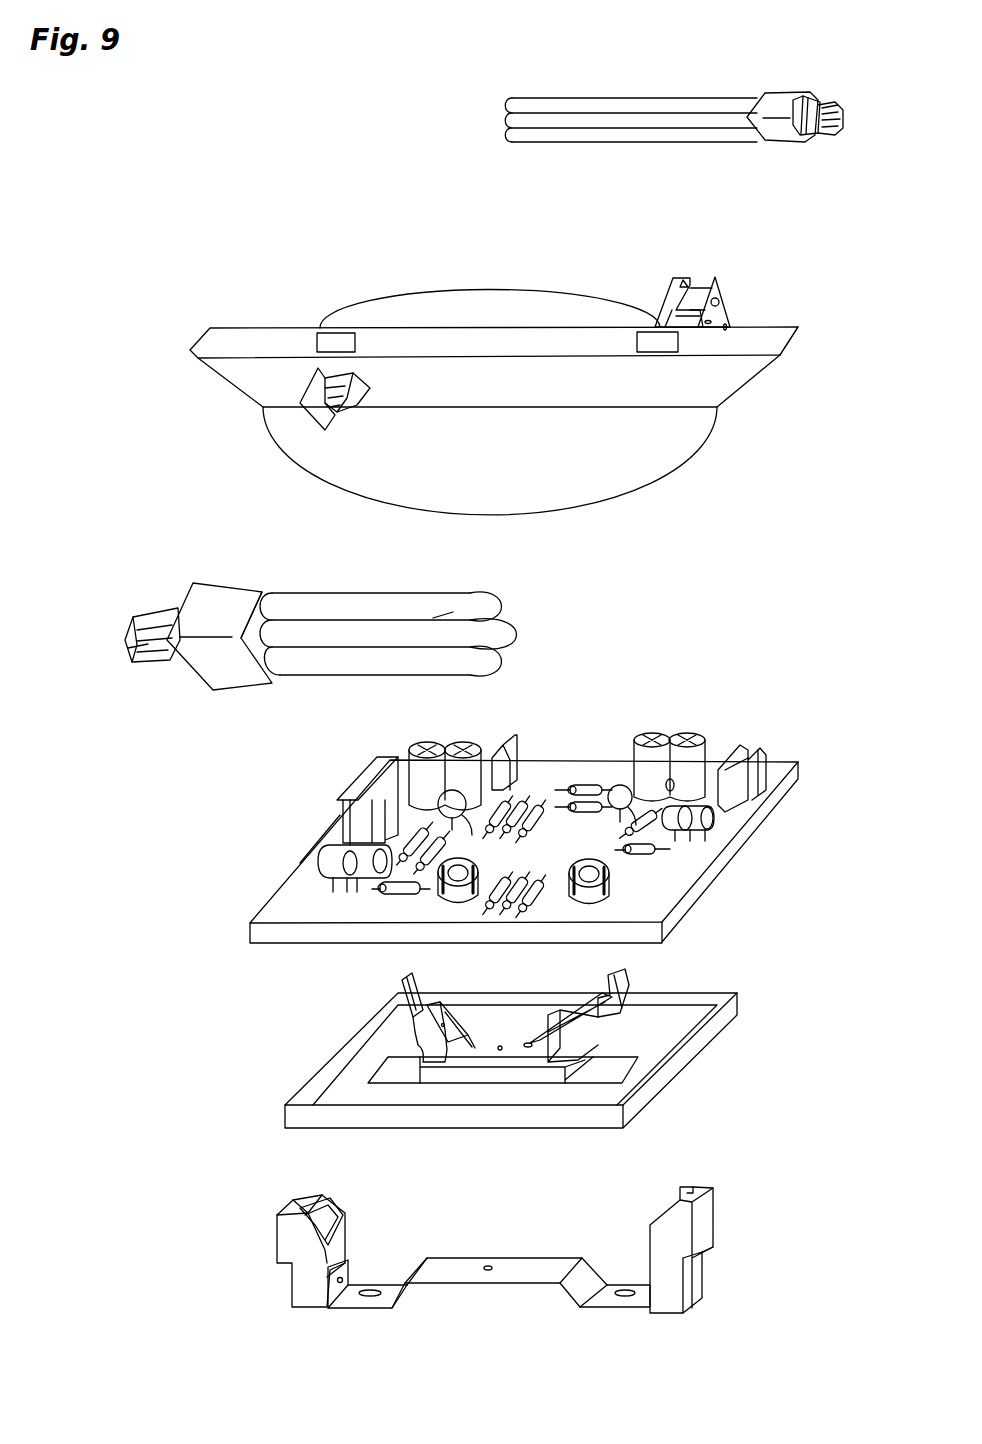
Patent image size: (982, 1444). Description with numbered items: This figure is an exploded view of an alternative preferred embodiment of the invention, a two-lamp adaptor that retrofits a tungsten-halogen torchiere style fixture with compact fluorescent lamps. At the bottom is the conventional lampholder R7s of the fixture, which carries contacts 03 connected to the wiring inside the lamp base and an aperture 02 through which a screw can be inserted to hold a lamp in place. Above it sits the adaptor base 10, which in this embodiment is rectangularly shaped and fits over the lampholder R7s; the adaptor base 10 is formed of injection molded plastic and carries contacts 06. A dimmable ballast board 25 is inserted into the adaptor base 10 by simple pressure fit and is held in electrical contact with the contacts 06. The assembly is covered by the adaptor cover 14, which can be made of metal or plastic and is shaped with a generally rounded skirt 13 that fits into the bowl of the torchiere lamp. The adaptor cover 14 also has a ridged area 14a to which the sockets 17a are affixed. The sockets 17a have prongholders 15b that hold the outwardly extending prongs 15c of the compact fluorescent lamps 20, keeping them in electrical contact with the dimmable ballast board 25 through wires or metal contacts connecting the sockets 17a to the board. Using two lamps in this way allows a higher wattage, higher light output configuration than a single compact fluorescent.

The prongs 15c is at (835, 107).
The adaptor cover 14 is at (280, 327).
The ridged area 14a is at (818, 322).
The rounded skirt 13 is at (644, 486).
The sockets 17a is at (662, 287).
The prongholders 15b is at (719, 301).
The compact fluorescent lamp 20 is at (230, 585).
The dimmable ballast board 25 is at (249, 932).
The adaptor base 10 is at (283, 1120).
The contacts 06 is at (406, 982).
The lampholder R7s is at (277, 1250).
The contacts 03 is at (344, 1281).
The aperture 02 is at (489, 1267).